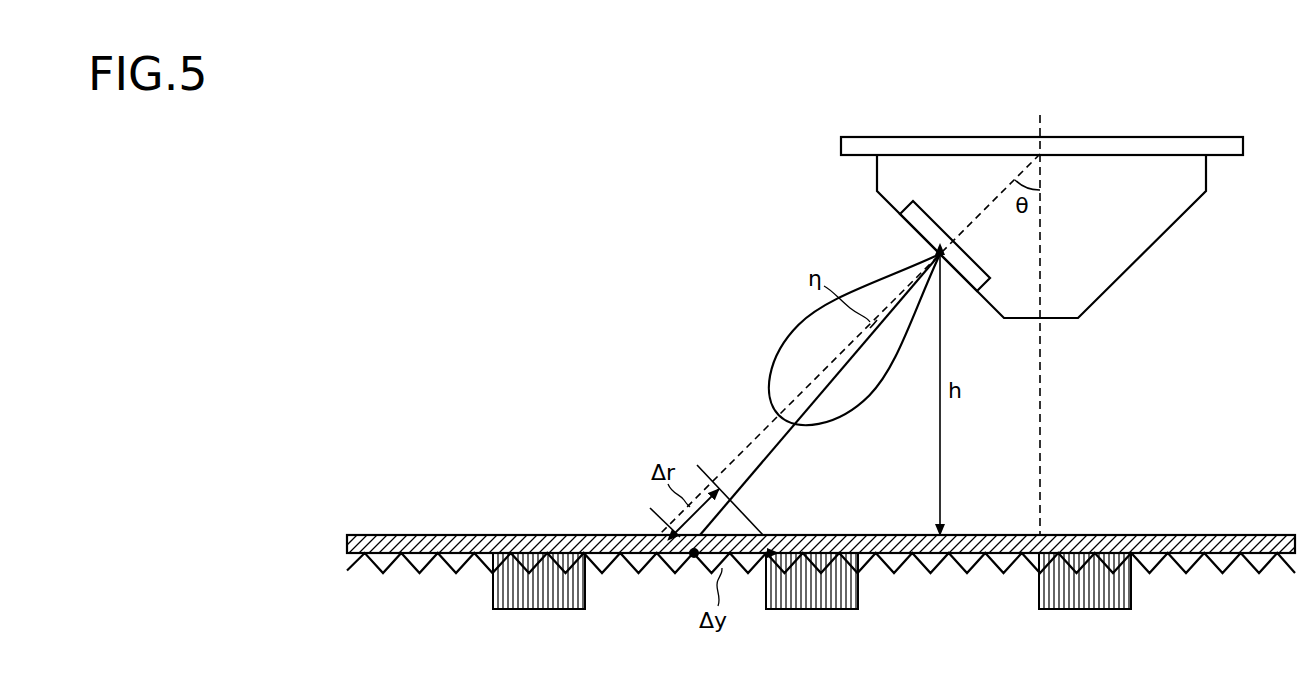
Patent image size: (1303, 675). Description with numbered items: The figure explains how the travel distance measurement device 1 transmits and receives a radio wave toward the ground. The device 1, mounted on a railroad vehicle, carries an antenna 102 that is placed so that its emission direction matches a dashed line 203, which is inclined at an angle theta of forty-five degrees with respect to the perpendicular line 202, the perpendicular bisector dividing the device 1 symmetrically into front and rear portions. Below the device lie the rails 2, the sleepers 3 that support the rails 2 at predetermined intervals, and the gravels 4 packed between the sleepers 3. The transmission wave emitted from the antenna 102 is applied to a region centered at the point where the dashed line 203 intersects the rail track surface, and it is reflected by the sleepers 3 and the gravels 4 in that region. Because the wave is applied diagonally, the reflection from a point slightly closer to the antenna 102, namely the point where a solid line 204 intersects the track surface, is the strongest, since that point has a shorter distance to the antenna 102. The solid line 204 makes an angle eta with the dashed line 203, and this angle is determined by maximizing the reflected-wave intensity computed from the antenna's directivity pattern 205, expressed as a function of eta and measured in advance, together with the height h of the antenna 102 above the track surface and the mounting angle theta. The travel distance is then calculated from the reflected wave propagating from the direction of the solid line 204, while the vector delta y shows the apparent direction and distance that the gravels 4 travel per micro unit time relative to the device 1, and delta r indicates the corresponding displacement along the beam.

The travel distance measurement device 1 is at (887, 207).
The antenna 102 is at (928, 236).
The rails 2 is at (391, 534).
The sleepers 3 is at (533, 610).
The gravels (ballast) 4 is at (639, 574).
The perpendicular line (dashed line) 202 is at (1043, 420).
The dashed line (radio wave emission direction) 203 is at (830, 365).
The solid line (direction of strongest reflection) 204 is at (862, 347).
The directivity pattern 205 is at (777, 340).